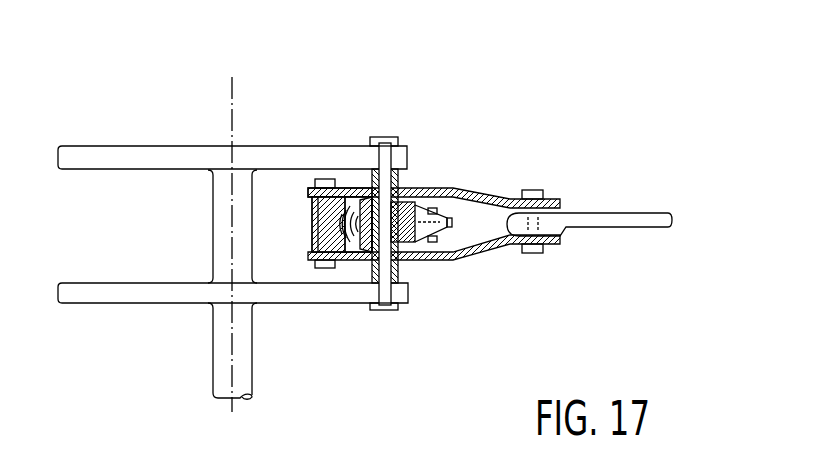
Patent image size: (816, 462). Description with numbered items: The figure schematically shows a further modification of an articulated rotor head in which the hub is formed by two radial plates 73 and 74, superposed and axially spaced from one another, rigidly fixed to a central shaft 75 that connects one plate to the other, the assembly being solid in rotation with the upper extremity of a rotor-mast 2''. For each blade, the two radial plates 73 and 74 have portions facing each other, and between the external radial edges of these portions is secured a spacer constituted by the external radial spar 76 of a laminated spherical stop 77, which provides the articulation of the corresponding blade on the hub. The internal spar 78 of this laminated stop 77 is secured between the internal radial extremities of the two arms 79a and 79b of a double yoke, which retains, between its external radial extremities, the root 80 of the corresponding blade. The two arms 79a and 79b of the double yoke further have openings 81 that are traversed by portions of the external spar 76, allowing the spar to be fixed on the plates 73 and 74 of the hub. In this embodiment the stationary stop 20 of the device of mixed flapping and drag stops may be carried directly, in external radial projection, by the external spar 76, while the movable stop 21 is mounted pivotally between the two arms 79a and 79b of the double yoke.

The radial plate 73 is at (108, 158).
The radial plate 74 is at (96, 295).
The central shaft 75 is at (223, 238).
The rotor-mast 2'' is at (205, 351).
The laminated spherical stop 77 is at (357, 182).
The internal spar 78 is at (313, 203).
The openings 81 is at (402, 186).
The external radial spar 76 is at (412, 200).
The movable stop 21 is at (442, 207).
The stationary stop 20 is at (438, 230).
The arm of double yoke 79a is at (498, 192).
The arm of double yoke 79b is at (483, 250).
The root of blade 80 is at (566, 200).